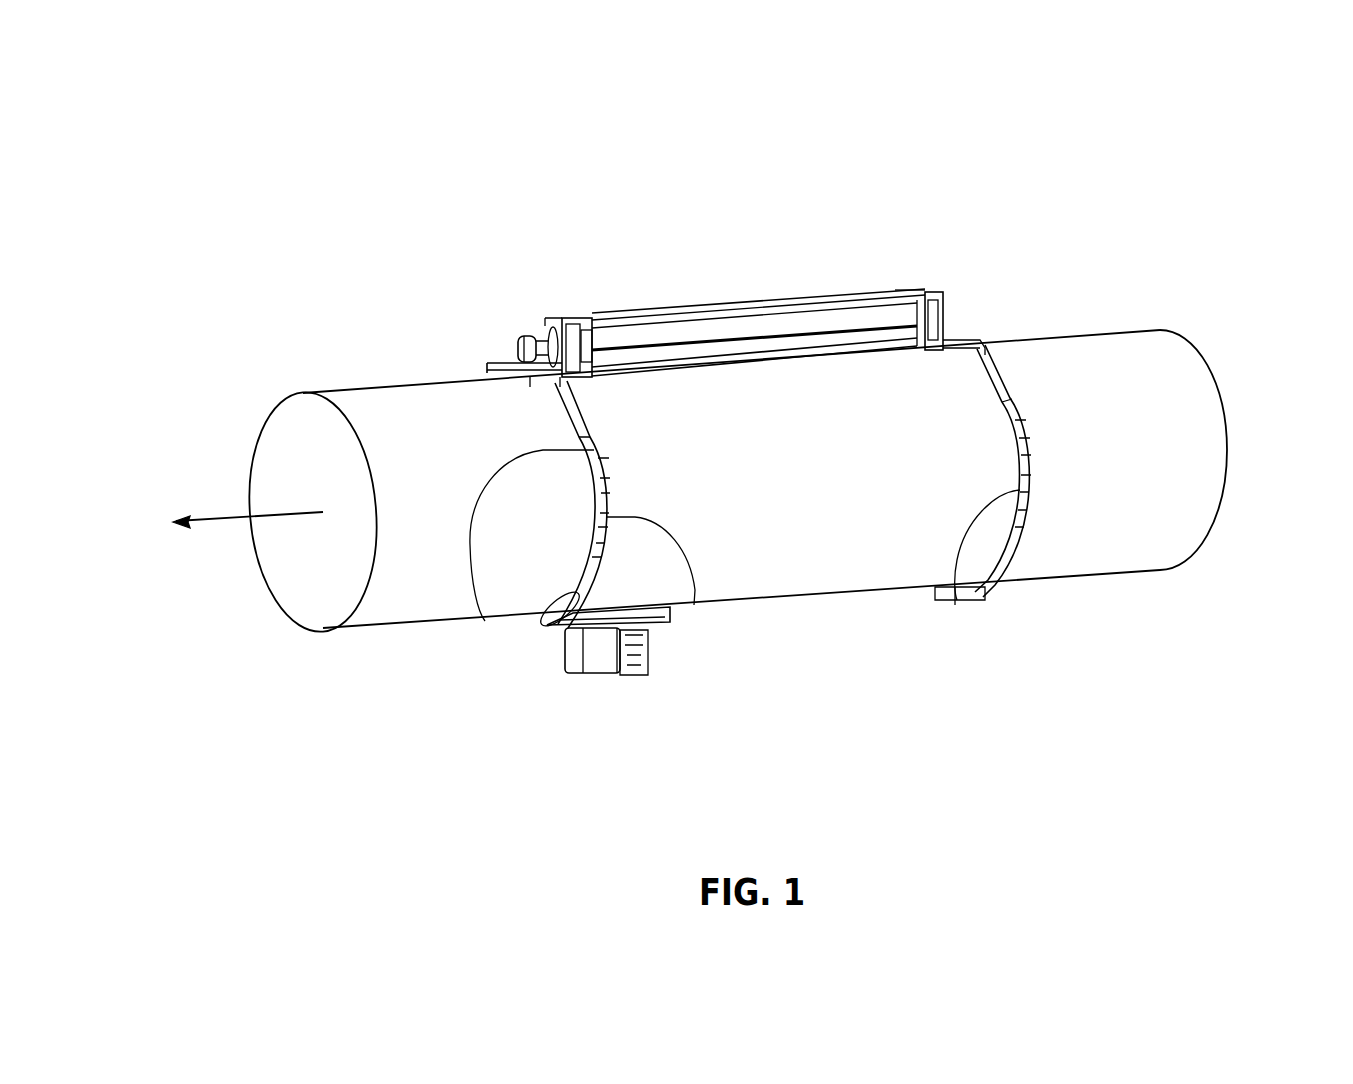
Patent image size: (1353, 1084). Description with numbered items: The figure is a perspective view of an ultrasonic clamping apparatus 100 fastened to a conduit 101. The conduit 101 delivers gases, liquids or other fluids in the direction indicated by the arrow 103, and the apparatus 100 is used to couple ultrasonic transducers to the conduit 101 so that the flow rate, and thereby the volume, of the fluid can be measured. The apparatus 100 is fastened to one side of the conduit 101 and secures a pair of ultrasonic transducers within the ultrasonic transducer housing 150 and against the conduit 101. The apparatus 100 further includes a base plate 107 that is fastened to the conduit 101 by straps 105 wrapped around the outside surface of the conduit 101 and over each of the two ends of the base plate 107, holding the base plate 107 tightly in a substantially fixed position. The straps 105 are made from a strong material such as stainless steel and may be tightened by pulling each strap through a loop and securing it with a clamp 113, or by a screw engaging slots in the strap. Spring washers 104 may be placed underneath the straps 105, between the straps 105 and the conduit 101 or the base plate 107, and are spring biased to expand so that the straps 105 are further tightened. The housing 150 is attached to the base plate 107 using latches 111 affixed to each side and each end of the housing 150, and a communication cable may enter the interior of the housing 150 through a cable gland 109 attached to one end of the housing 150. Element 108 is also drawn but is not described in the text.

The ultrasonic clamping apparatus 100 is at (820, 142).
The conduit 101 is at (1160, 330).
The arrow 103 is at (213, 525).
The spring washers 104 is at (694, 605).
The straps 105 is at (537, 622).
The base plate 107 is at (487, 367).
The fastener 108 is at (593, 690).
The cable gland 109 is at (536, 330).
The latches 111 is at (575, 315).
The clamp 113 is at (490, 627).
The ultrasonic transducer housing 150 is at (652, 312).